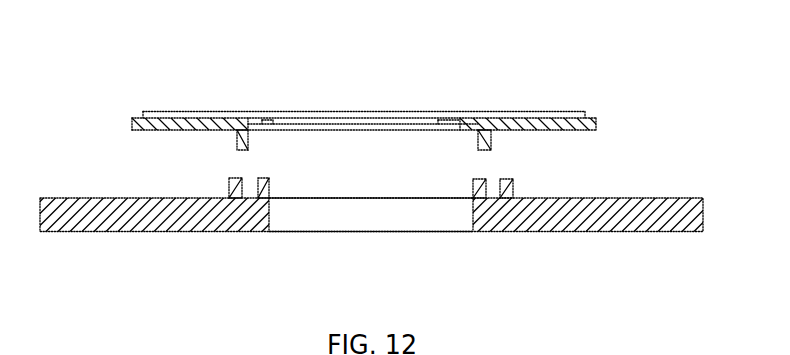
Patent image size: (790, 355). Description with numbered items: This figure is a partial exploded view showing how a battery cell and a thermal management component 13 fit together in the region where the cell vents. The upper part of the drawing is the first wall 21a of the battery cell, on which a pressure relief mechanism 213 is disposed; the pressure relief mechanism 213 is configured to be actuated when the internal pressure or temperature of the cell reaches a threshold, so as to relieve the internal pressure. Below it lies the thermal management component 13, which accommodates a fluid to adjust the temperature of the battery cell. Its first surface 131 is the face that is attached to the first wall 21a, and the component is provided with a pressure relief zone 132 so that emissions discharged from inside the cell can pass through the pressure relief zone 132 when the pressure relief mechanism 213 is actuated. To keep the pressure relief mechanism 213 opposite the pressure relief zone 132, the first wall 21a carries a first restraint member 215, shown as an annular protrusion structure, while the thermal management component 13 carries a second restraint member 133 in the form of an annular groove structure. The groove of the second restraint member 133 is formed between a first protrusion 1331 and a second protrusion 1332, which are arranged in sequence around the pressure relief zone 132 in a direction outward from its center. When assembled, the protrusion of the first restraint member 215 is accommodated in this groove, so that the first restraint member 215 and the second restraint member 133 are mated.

The thermal management component 13 is at (369, 230).
The first surface 131 is at (613, 198).
The pressure relief zone 132 is at (417, 213).
The second restraint member 133 is at (248, 245).
The first protrusion 1331 is at (287, 227).
The second protrusion 1332 is at (240, 184).
The pressure relief mechanism 213 is at (370, 122).
The first wall 21a is at (543, 123).
The first restraint member 215 is at (250, 140).